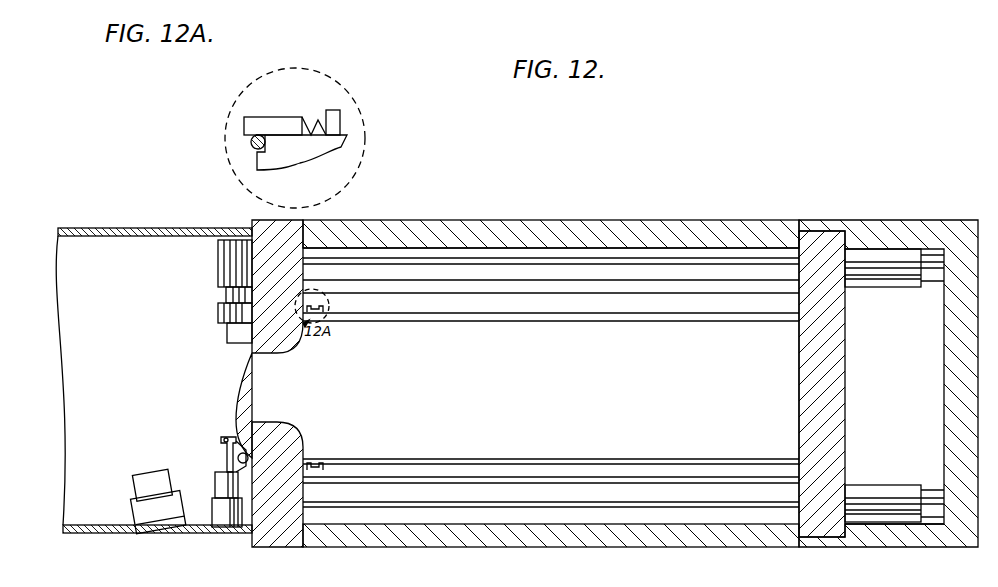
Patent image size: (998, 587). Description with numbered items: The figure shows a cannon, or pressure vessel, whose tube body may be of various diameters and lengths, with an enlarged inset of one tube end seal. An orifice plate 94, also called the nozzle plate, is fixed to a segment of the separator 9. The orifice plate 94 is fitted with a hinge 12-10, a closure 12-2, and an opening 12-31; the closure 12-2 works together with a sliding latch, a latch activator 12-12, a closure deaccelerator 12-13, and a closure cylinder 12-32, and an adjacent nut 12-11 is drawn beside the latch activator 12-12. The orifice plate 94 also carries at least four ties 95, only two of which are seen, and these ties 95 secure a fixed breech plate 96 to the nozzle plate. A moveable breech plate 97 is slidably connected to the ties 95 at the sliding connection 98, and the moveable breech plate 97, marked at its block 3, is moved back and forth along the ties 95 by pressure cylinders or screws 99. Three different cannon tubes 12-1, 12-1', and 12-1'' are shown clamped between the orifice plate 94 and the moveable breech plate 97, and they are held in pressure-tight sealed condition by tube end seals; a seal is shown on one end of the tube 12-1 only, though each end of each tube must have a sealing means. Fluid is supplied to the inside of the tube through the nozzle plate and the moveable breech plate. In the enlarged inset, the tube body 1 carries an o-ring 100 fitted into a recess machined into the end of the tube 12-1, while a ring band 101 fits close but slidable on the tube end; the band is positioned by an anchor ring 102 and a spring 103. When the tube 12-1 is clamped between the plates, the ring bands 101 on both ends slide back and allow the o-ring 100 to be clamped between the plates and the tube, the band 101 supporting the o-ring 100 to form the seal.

In FIG. 12, the separator 9 is at (126, 228).
In FIG. 12, the ties 95 is at (712, 226).
In FIG. 12, the moveable breech plate 97 is at (832, 356).
In FIG. 12, the block 3 is at (799, 385).
In FIG. 12, the fixed breech plate 96 is at (944, 412).
In FIG. 12, the sliding connection 98 is at (853, 532).
In FIG. 12, the pressure cylinders or screws 99 is at (858, 288).
In FIG. 12, the cannon tube 12-1 is at (551, 377).
In FIG. 12, the cannon tube 12-1' is at (551, 370).
In FIG. 12, the cannon tube 12-1'' is at (551, 379).
In FIG. 12, the opening 12-31 is at (276, 353).
In FIG. 12, the orifice plate 94 is at (288, 536).
In FIG. 12, the closure 12-2 is at (237, 379).
In FIG. 12, the latch activator 12-12 is at (226, 262).
In FIG. 12, the nut 12-11 is at (228, 337).
In FIG. 12, the hinge 12-10 is at (238, 456).
In FIG. 12, the closure cylinder 12-32 is at (223, 520).
In FIG. 12, the closure deaccelerator 12-13 is at (141, 501).
In FIG. 12A, the ring band 101 is at (286, 127).
In FIG. 12A, the spring 103 is at (307, 117).
In FIG. 12A, the anchor ring 102 is at (336, 122).
In FIG. 12A, the body 1 is at (302, 146).
In FIG. 12A, the o-ring 100 is at (250, 146).